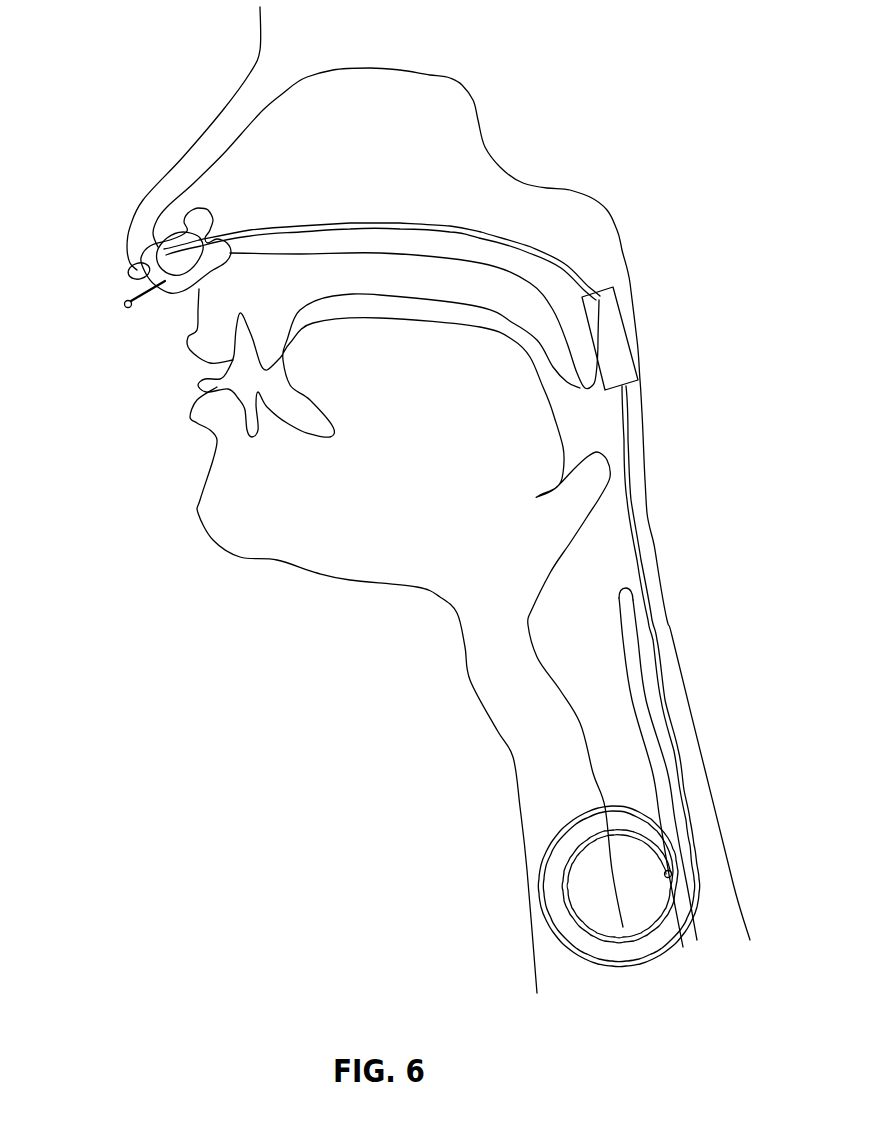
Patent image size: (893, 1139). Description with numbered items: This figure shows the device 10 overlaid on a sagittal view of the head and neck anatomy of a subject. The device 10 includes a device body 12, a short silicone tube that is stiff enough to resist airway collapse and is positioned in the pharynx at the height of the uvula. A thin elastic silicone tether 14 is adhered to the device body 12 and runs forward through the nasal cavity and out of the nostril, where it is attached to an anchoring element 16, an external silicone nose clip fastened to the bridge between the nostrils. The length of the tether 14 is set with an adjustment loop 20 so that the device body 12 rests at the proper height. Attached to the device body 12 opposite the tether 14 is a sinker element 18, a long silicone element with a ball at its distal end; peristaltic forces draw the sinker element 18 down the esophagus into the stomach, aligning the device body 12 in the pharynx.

The device 10 is at (713, 397).
The device body 12 is at (612, 318).
The tether 14 is at (418, 222).
The anchoring element 16 is at (172, 290).
The sinker element 18 is at (680, 747).
The adjustment loop 20 is at (130, 280).